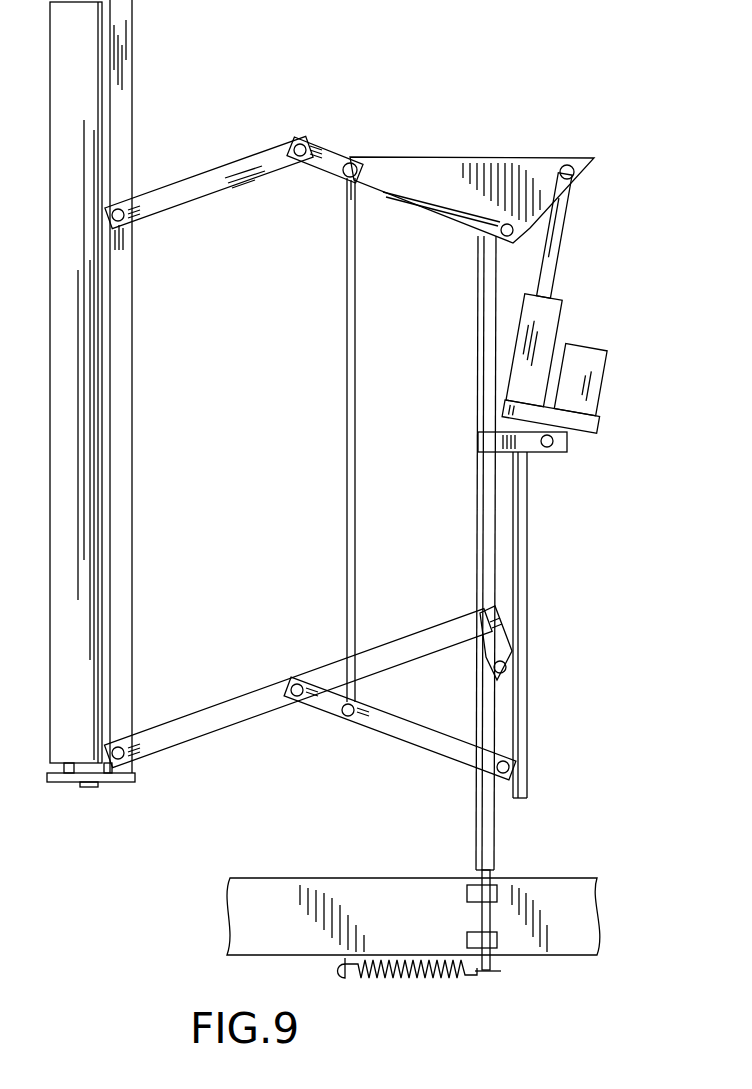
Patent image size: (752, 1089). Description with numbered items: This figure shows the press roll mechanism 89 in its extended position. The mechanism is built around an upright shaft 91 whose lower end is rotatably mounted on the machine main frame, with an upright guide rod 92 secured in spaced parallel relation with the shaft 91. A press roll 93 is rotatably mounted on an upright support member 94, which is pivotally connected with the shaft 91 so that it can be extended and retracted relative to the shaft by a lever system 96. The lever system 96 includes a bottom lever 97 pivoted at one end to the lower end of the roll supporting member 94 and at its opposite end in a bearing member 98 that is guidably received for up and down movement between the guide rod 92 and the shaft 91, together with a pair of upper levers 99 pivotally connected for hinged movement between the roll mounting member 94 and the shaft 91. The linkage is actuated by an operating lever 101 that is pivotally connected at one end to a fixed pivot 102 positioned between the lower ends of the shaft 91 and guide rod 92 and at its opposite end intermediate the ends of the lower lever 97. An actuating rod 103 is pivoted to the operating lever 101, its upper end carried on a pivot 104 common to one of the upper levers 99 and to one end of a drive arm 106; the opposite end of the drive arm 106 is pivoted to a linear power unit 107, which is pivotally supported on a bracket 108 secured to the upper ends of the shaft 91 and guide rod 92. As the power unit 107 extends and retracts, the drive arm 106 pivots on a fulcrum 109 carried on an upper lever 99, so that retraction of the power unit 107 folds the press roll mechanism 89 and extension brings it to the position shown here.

The press roll mechanism 89 is at (235, 133).
The upright shaft 91 is at (490, 830).
The upright guide rod 92 is at (528, 570).
The press roll 93 is at (80, 298).
The upright support member 94 is at (118, 432).
The lever system 96 is at (240, 154).
The bottom lever 97 is at (214, 725).
The bearing member 98 is at (506, 665).
The upper levers 99 is at (322, 142).
The operating lever 101 is at (373, 716).
The fixed pivot 102 is at (509, 769).
The actuating rod 103 is at (348, 316).
The pivot 104 is at (352, 163).
The drive arm 106 is at (430, 170).
The linear power unit 107 is at (540, 330).
The bracket 108 is at (528, 440).
The fulcrum 109 is at (507, 224).